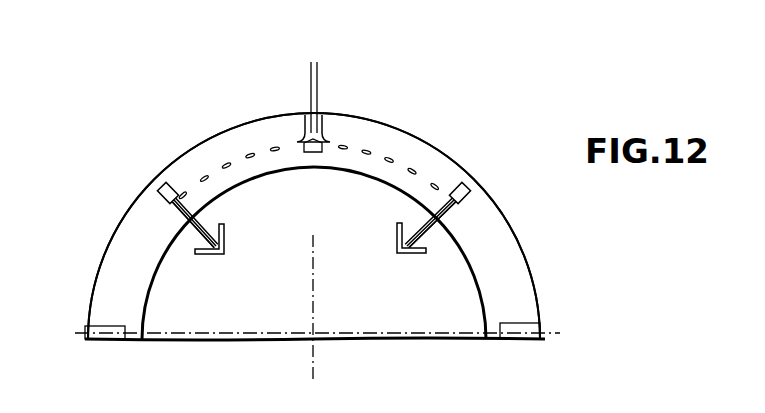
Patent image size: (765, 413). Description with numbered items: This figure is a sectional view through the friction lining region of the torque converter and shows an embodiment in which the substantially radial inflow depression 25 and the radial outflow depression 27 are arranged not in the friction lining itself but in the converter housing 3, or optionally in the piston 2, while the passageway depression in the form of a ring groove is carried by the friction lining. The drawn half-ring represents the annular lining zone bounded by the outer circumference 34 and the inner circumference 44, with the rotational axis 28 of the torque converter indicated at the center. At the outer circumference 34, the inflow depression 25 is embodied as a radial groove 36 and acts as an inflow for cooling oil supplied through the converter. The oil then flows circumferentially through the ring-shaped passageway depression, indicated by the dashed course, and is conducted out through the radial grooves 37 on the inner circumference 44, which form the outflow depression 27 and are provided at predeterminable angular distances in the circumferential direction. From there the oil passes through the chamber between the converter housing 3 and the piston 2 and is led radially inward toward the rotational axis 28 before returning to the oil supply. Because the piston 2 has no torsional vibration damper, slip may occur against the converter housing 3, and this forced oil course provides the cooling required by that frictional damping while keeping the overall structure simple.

The inflow depression 25 is at (307, 113).
The outflow depression 27 is at (158, 184).
The radial groove 36 is at (98, 333).
The radial groove 37 is at (176, 218).
The outer circumference 34 is at (113, 231).
The inner circumference 44 is at (268, 178).
The converter housing 3 is at (408, 147).
The piston 2 is at (314, 215).
The rotational axis 28 is at (317, 320).